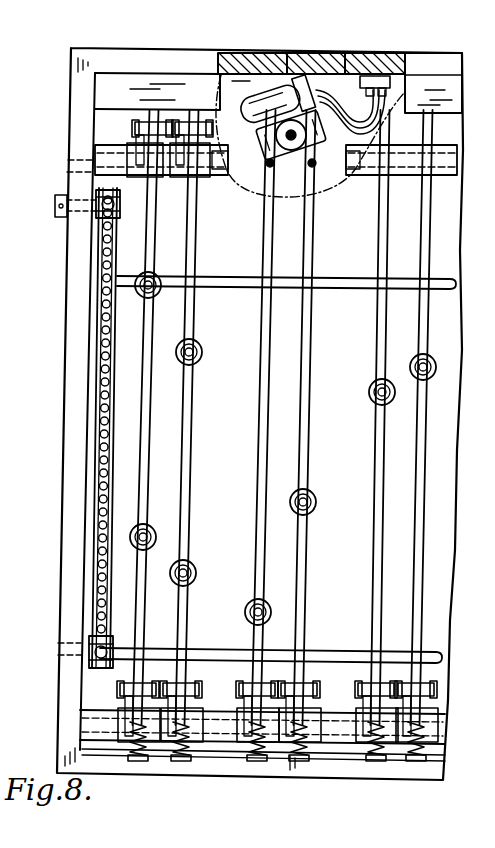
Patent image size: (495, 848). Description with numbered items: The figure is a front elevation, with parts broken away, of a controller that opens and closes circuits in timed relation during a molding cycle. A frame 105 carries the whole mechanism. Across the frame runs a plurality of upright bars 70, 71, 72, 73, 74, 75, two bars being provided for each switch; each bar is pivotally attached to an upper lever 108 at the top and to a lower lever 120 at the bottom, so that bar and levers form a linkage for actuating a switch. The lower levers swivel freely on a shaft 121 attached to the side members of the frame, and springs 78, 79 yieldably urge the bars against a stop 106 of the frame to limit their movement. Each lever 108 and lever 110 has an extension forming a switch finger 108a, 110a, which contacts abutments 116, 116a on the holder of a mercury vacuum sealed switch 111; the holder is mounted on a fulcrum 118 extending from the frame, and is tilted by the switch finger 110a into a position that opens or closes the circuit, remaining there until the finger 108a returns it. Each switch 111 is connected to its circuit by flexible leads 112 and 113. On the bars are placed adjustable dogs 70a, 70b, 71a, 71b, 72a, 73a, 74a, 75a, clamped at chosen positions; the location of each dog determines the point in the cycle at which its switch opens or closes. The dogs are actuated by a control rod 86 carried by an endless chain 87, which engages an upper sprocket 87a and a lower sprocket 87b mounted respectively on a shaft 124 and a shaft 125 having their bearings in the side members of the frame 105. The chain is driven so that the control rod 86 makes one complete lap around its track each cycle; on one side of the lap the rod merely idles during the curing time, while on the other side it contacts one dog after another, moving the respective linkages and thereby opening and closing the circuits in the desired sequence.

The bar 70 is at (151, 428).
The bar 71 is at (193, 428).
The bar 72 is at (269, 428).
The bar 73 is at (310, 428).
The bar 74 is at (385, 428).
The bar 75 is at (427, 428).
The adjustable dog 70a is at (158, 295).
The adjustable dog 71a is at (203, 351).
The adjustable dog 72a is at (264, 601).
The adjustable dog 73a is at (315, 491).
The adjustable dog 74a is at (371, 384).
The adjustable dog 75a is at (413, 357).
The adjustable dog 70b is at (149, 526).
The adjustable dog 71b is at (196, 568).
The spring 78 is at (130, 749).
The spring 79 is at (190, 757).
The control rod 86 is at (232, 283).
The endless chain 87 is at (92, 380).
The upper sprocket 87a is at (100, 222).
The lower sprocket 87b is at (90, 648).
The frame 105 is at (78, 290).
The stop 106 is at (108, 97).
The lever 108 is at (136, 131).
The switch finger 108a is at (162, 172).
The lever 110 is at (186, 120).
The switch finger 110a is at (214, 174).
The switch 111 is at (276, 100).
The flexible lead 112 is at (330, 92).
The flexible lead 113 is at (356, 143).
The abutment 116 is at (364, 152).
The abutment 116a is at (229, 73).
The fulcrum 118 is at (262, 144).
The lever 120 is at (120, 700).
The shaft 121 is at (345, 740).
The shaft 124 is at (56, 205).
The shaft 125 is at (327, 650).